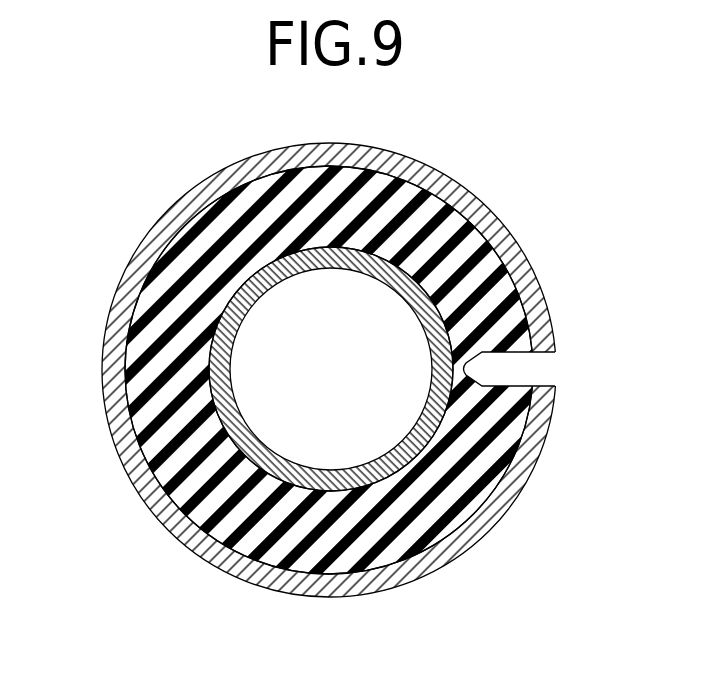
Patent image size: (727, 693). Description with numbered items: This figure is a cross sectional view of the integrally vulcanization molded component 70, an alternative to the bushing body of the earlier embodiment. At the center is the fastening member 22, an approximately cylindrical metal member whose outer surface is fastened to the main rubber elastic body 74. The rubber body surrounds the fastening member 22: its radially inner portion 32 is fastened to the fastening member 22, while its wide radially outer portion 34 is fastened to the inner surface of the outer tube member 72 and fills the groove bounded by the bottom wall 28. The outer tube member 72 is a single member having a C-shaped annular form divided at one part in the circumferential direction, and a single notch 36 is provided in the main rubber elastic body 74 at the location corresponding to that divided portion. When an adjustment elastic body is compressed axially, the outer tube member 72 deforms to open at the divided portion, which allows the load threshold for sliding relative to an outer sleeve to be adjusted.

The fastening member 22 is at (285, 265).
The bottom wall 28 is at (127, 313).
The radially inner portion 32 is at (330, 494).
The radially outer portion 34 is at (283, 545).
The notch 36 is at (488, 353).
The integrally vulcanization molded component 70 is at (548, 169).
The outer tube member 72 is at (514, 528).
The main rubber elastic body 74 is at (143, 489).